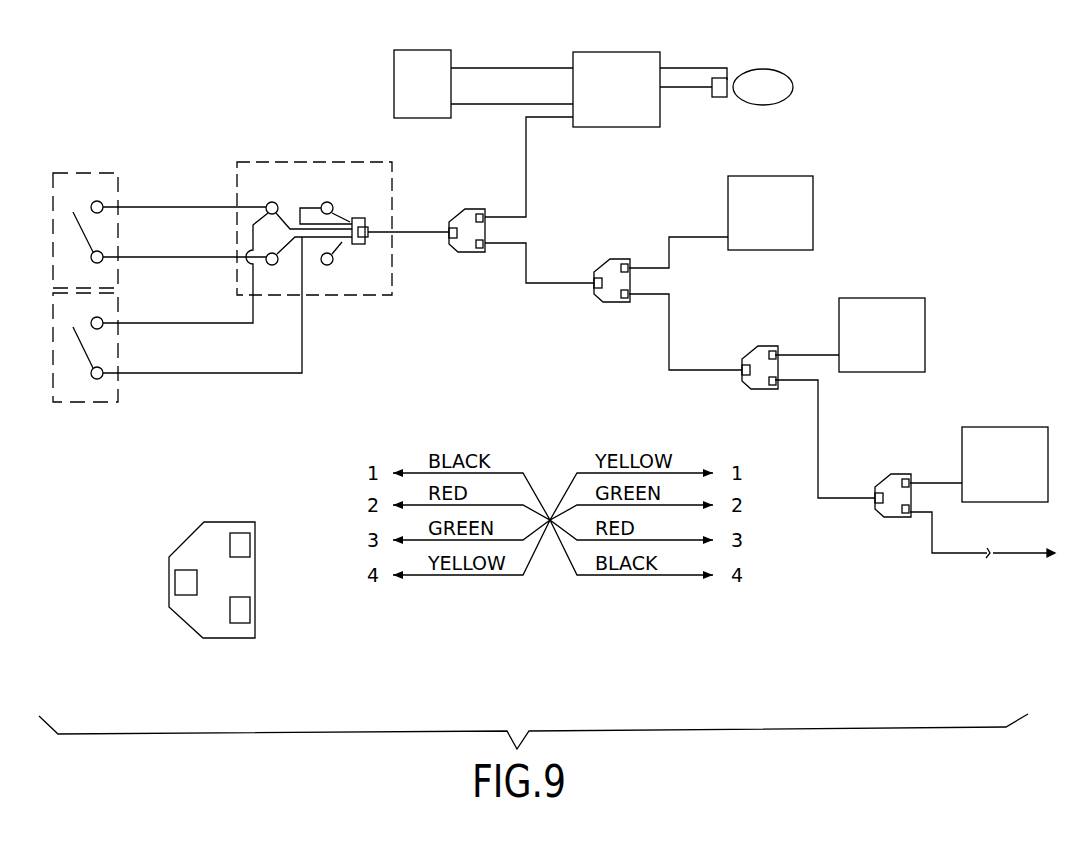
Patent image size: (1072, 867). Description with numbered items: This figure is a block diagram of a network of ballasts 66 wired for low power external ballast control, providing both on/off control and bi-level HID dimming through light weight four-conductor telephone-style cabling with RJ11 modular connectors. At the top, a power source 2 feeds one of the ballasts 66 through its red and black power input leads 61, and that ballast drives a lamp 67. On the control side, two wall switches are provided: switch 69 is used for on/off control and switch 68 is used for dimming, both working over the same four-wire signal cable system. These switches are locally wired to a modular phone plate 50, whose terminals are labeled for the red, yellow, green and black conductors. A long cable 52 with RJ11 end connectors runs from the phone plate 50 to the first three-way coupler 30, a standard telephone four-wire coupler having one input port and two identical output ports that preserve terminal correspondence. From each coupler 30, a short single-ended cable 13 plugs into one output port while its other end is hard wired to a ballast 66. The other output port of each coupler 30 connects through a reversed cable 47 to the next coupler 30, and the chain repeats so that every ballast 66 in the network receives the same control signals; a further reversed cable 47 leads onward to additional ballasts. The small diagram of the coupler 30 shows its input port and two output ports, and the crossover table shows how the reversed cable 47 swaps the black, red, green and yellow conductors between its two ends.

The power source 2 is at (425, 50).
The red and black power input leads 61 is at (493, 68).
The ballasts 66 is at (610, 52).
The damper motor 67 is at (768, 69).
The short single-ended cable 13 is at (550, 118).
The 3-way coupler 30 is at (488, 210).
The reversed cable 47 is at (545, 283).
The long cable 52 is at (422, 232).
The modular phone plate 50 is at (335, 162).
The switch 69 is at (73, 173).
The switch 68 is at (115, 402).